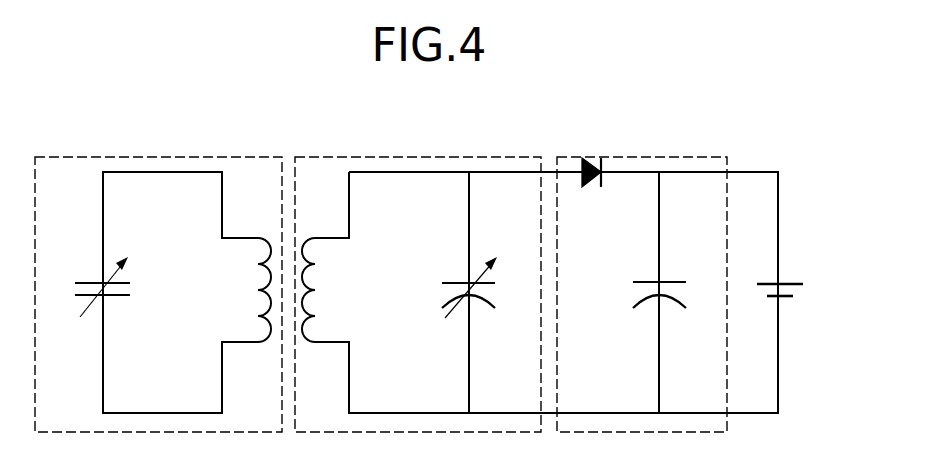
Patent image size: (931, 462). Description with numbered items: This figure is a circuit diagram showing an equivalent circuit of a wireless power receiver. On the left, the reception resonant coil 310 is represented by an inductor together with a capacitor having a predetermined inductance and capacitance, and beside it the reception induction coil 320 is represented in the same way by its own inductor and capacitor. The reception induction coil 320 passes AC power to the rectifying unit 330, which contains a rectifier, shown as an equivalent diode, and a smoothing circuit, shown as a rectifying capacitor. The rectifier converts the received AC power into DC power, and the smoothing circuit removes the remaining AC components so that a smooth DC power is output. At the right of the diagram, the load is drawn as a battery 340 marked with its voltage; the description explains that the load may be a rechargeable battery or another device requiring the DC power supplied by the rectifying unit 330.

The reception resonant coil 310 is at (190, 155).
The reception induction coil 320 is at (442, 155).
The rectifying unit 330 is at (662, 155).
The battery (1.3V) 340 is at (797, 268).